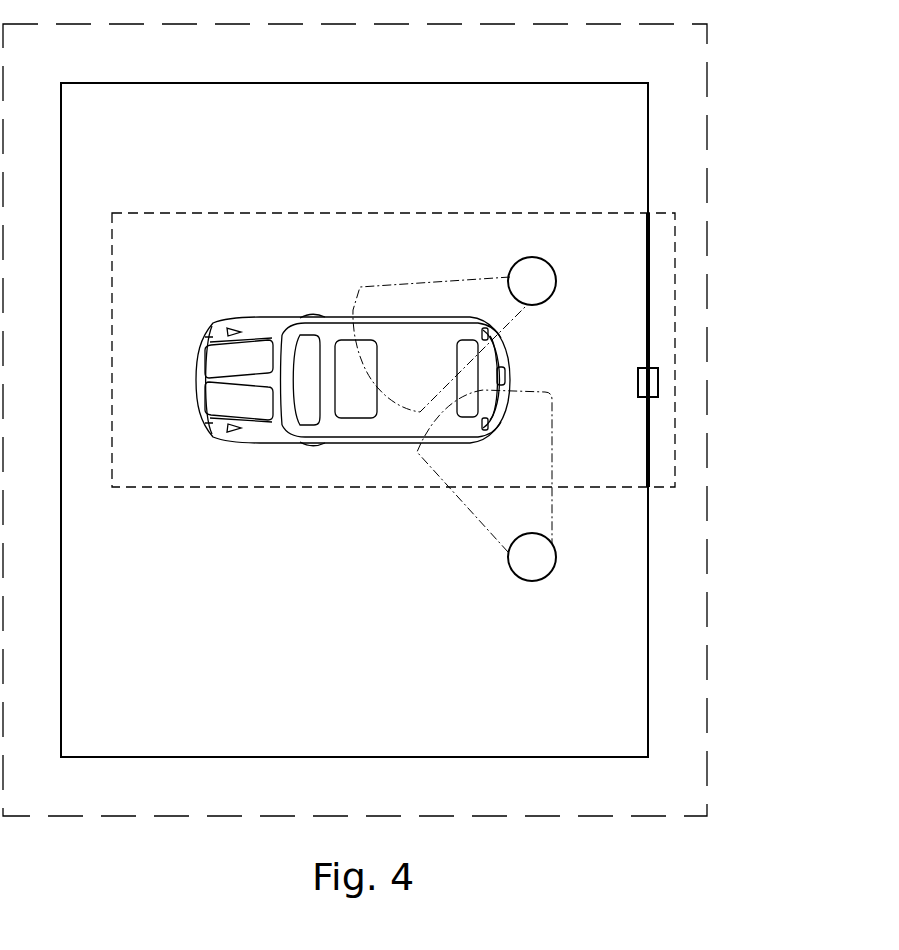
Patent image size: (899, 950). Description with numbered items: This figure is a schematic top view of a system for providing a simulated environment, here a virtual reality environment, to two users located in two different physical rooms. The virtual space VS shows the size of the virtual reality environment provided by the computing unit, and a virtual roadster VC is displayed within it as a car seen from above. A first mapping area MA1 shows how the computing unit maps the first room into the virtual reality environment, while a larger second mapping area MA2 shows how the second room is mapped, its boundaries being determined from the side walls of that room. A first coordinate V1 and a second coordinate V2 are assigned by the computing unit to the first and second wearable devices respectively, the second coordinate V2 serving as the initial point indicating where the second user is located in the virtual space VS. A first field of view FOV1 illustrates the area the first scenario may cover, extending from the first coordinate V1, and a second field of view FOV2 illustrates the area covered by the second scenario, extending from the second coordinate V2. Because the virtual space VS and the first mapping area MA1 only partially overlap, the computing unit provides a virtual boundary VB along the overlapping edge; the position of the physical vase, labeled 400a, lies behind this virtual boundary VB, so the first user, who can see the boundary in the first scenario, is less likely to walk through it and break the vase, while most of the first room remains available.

The second mapping area MA2 is at (707, 77).
The first mapping area MA1 is at (586, 212).
The virtual space VS is at (648, 640).
The virtual boundary VB is at (648, 329).
The position of the vase 400a is at (658, 382).
The first coordinate V1 is at (555, 276).
The second coordinate V2 is at (556, 555).
The first field of view FOV1 is at (455, 297).
The second field of view FOV2 is at (490, 508).
The virtual roadster VC is at (328, 440).